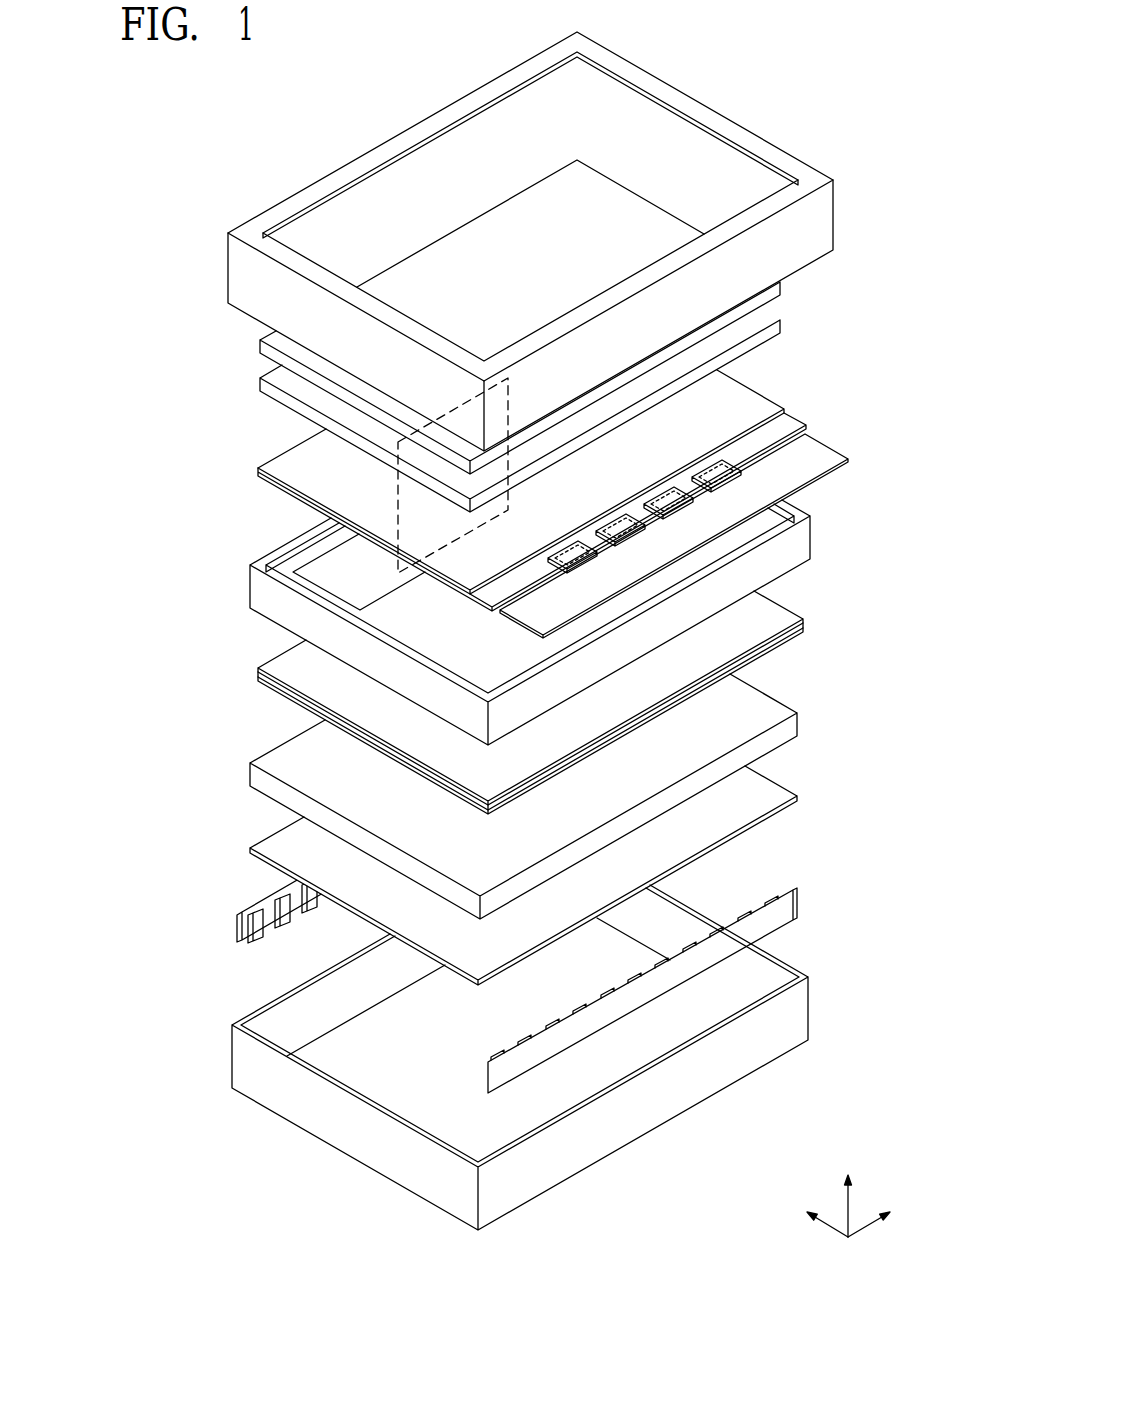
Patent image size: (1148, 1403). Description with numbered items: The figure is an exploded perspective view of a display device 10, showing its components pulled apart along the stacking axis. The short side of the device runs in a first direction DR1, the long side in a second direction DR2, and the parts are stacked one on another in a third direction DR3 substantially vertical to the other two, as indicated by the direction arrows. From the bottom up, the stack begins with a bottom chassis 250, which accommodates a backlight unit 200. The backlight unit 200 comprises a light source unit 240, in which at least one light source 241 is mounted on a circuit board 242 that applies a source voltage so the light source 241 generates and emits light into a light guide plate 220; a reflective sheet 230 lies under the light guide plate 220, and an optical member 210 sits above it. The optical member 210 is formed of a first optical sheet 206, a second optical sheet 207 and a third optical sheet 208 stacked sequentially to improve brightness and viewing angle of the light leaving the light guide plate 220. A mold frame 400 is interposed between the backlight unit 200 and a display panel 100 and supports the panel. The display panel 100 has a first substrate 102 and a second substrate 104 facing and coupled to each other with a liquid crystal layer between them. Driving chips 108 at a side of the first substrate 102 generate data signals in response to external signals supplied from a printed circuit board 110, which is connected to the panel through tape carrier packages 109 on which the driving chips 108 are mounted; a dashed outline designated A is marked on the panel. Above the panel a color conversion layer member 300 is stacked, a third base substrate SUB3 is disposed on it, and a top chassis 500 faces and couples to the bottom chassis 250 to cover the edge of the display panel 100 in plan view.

The display device 10 is at (752, 92).
The top chassis 500 is at (822, 205).
The third base substrate SUB3 is at (260, 342).
The color conversion layer member 300 is at (260, 382).
The display panel 100 is at (574, 474).
The second substrate 104 is at (720, 377).
The first substrate 102 is at (720, 393).
The driving chip 108 is at (705, 473).
The tape carrier package 109 is at (683, 478).
The printed circuit board 110 is at (797, 472).
The region A is at (397, 505).
The mold frame 400 is at (802, 538).
The backlight unit 200 is at (437, 910).
The optical member 210 is at (463, 702).
The first optical sheet 206 is at (275, 663).
The second optical sheet 207 is at (260, 675).
The third optical sheet 208 is at (270, 682).
The light guide plate 220 is at (262, 775).
The reflective sheet 230 is at (285, 848).
The light source unit 240 is at (226, 930).
The light source 241 is at (260, 923).
The circuit board 242 is at (270, 923).
The bottom chassis 250 is at (465, 1057).
The first direction DR1 is at (812, 1211).
The second direction DR2 is at (883, 1212).
The third direction DR3 is at (849, 1193).